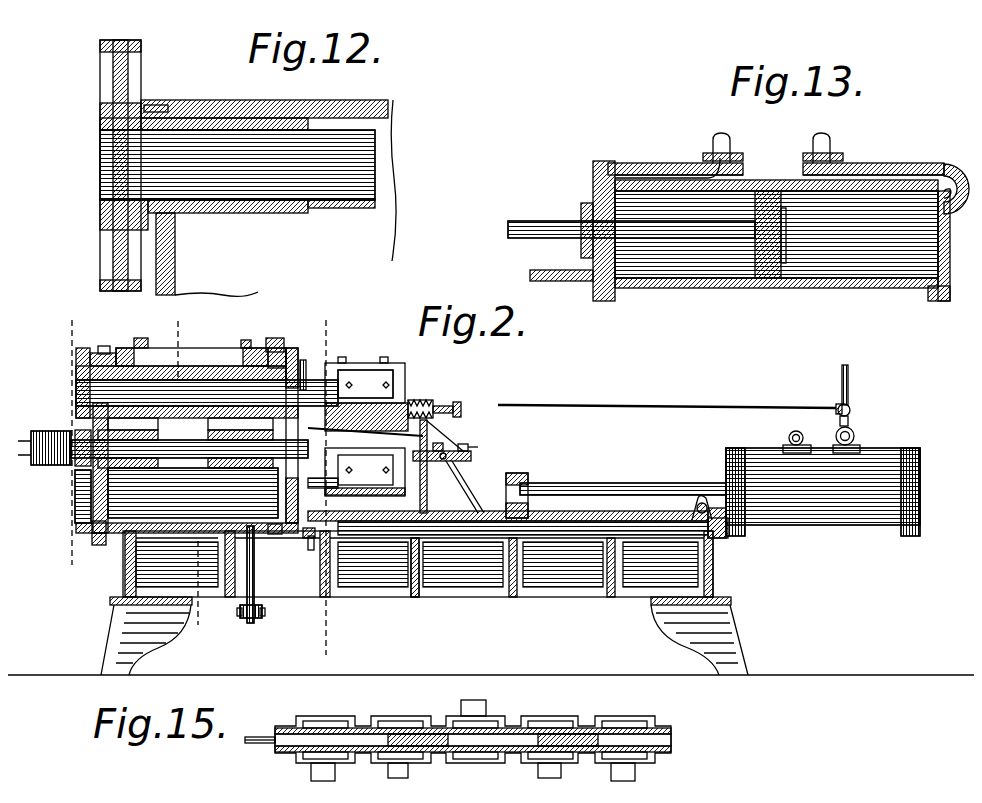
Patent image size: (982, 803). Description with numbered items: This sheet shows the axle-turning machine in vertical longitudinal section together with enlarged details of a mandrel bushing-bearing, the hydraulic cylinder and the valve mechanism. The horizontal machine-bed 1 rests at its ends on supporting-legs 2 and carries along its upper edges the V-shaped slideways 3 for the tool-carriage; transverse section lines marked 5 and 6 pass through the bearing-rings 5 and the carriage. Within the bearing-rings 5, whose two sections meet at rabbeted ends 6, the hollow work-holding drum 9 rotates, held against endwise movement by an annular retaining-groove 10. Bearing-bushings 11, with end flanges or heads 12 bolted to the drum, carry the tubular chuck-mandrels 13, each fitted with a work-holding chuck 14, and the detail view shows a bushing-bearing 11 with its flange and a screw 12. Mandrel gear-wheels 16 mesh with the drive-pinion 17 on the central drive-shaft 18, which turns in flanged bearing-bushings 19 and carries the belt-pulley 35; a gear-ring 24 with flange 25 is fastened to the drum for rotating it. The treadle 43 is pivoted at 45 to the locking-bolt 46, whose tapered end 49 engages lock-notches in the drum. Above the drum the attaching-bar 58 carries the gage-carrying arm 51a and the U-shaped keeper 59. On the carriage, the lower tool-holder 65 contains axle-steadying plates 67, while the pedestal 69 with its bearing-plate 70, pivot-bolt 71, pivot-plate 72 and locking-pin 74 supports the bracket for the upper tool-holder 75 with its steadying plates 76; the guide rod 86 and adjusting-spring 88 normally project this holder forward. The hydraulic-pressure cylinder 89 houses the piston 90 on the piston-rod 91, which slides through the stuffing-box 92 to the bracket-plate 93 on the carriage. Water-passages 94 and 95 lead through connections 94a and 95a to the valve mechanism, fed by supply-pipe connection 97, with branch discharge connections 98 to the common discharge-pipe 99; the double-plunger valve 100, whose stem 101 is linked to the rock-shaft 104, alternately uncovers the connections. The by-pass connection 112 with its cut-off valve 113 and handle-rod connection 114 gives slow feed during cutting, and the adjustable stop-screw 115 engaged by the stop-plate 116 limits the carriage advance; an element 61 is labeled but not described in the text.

In FIG. 2, the machine-bed 1 is at (120, 566).
In FIG. 2, the supporting-legs 2 is at (100, 615).
In FIG. 2, the longitudinal slideways 3 is at (387, 442).
In FIG. 2, the bearing-rings 5 is at (187, 473).
In FIG. 2, the rabbeted meeting ends 6 is at (324, 485).
In FIG. 12, the rotatable work-holding drum 9 is at (388, 100).
In FIG. 2, the rotatable work-holding drum 9 is at (193, 493).
In FIG. 2, the annular retaining-groove 10 is at (212, 340).
In FIG. 12, the bearing-bushings 11 is at (243, 205).
In FIG. 2, the bearing-bushings 11 is at (218, 489).
In FIG. 12, the end flanges or heads 12 is at (142, 97).
In FIG. 12, the tubular chuck-mandrels 13 is at (336, 195).
In FIG. 2, the tubular chuck-mandrels 13 is at (72, 384).
In FIG. 2, the work-holding chuck 14 is at (290, 345).
In FIG. 12, the mandrel gear-wheels 16 is at (95, 83).
In FIG. 2, the mandrel gear-wheels 16 is at (68, 350).
In FIG. 2, the drive-pinion 17 is at (68, 458).
In FIG. 2, the central drive-shaft 18 is at (150, 440).
In FIG. 2, the flanged bearing-bushings 19 is at (124, 425).
In FIG. 2, the gear-ring 24 is at (94, 338).
In FIG. 2, the flange 25 is at (85, 522).
In FIG. 2, the belt-pulley 35 is at (42, 425).
In FIG. 2, the treadle 43 is at (241, 612).
In FIG. 2, the pivotal attachment 45 is at (254, 608).
In FIG. 2, the locking-bolt 46 is at (248, 588).
In FIG. 2, the tapered upper end 49 is at (272, 526).
In FIG. 2, the gage-carrying arm 51a is at (240, 332).
In FIG. 2, the attaching-bar 58 is at (136, 340).
In FIG. 2, the U-shaped keeper 59 is at (268, 330).
In FIG. 2, the rib 61 is at (440, 513).
In FIG. 2, the lower tool-holder 65 is at (340, 432).
In FIG. 2, the axle-steadying plates 67 is at (356, 472).
In FIG. 2, the pedestal 69 is at (452, 462).
In FIG. 2, the horizontal bearing-plate 70 is at (435, 452).
In FIG. 2, the pivot-bolt 71 is at (435, 438).
In FIG. 2, the pivot-plate 72 is at (463, 447).
In FIG. 2, the locking-pin 74 is at (462, 436).
In FIG. 2, the upper tool-holder 75 is at (348, 355).
In FIG. 2, the axle-steadying plates 76 is at (365, 384).
In FIG. 2, the guide rod or bolt 86 is at (448, 394).
In FIG. 2, the adjusting-spring 88 is at (410, 392).
In FIG. 13, the hydraulic-pressure cylinder 89 is at (740, 233).
In FIG. 2, the hydraulic-pressure cylinder 89 is at (905, 470).
In FIG. 13, the piston 90 is at (756, 250).
In FIG. 13, the piston-rod 91 is at (524, 214).
In FIG. 2, the piston-rod 91 is at (630, 475).
In FIG. 13, the stuffing-box 92 is at (530, 262).
In FIG. 2, the bracket-plate 93 is at (518, 468).
In FIG. 13, the water-passage 94 is at (646, 168).
In FIG. 13, the cylinder connection 94a is at (714, 126).
In FIG. 2, the cylinder connection 94a is at (803, 434).
In FIG. 15, the cylinder connection 94a is at (380, 758).
In FIG. 13, the water-passage 95 is at (862, 172).
In FIG. 13, the cylinder connection 95a is at (815, 126).
In FIG. 2, the cylinder connection 95a is at (848, 428).
In FIG. 15, the cylinder connection 95a is at (530, 758).
In FIG. 15, the water-supply-pipe connection 97 is at (453, 698).
In FIG. 15, the branch discharge-pipe connections 98 is at (303, 762).
In FIG. 15, the common discharge-pipe 99 is at (627, 765).
In FIG. 15, the double-plunger valve 100 is at (432, 755).
In FIG. 15, the valve stem 101 is at (242, 737).
In FIG. 2, the rock-shaft 104 is at (693, 490).
In FIG. 2, the by-pass connection 112 is at (842, 362).
In FIG. 2, the cut-off valve 113 is at (842, 400).
In FIG. 2, the handle-rod connection 114 is at (670, 396).
In FIG. 2, the adjustable stop-screw 115 is at (300, 532).
In FIG. 2, the stop-plate 116 is at (305, 540).